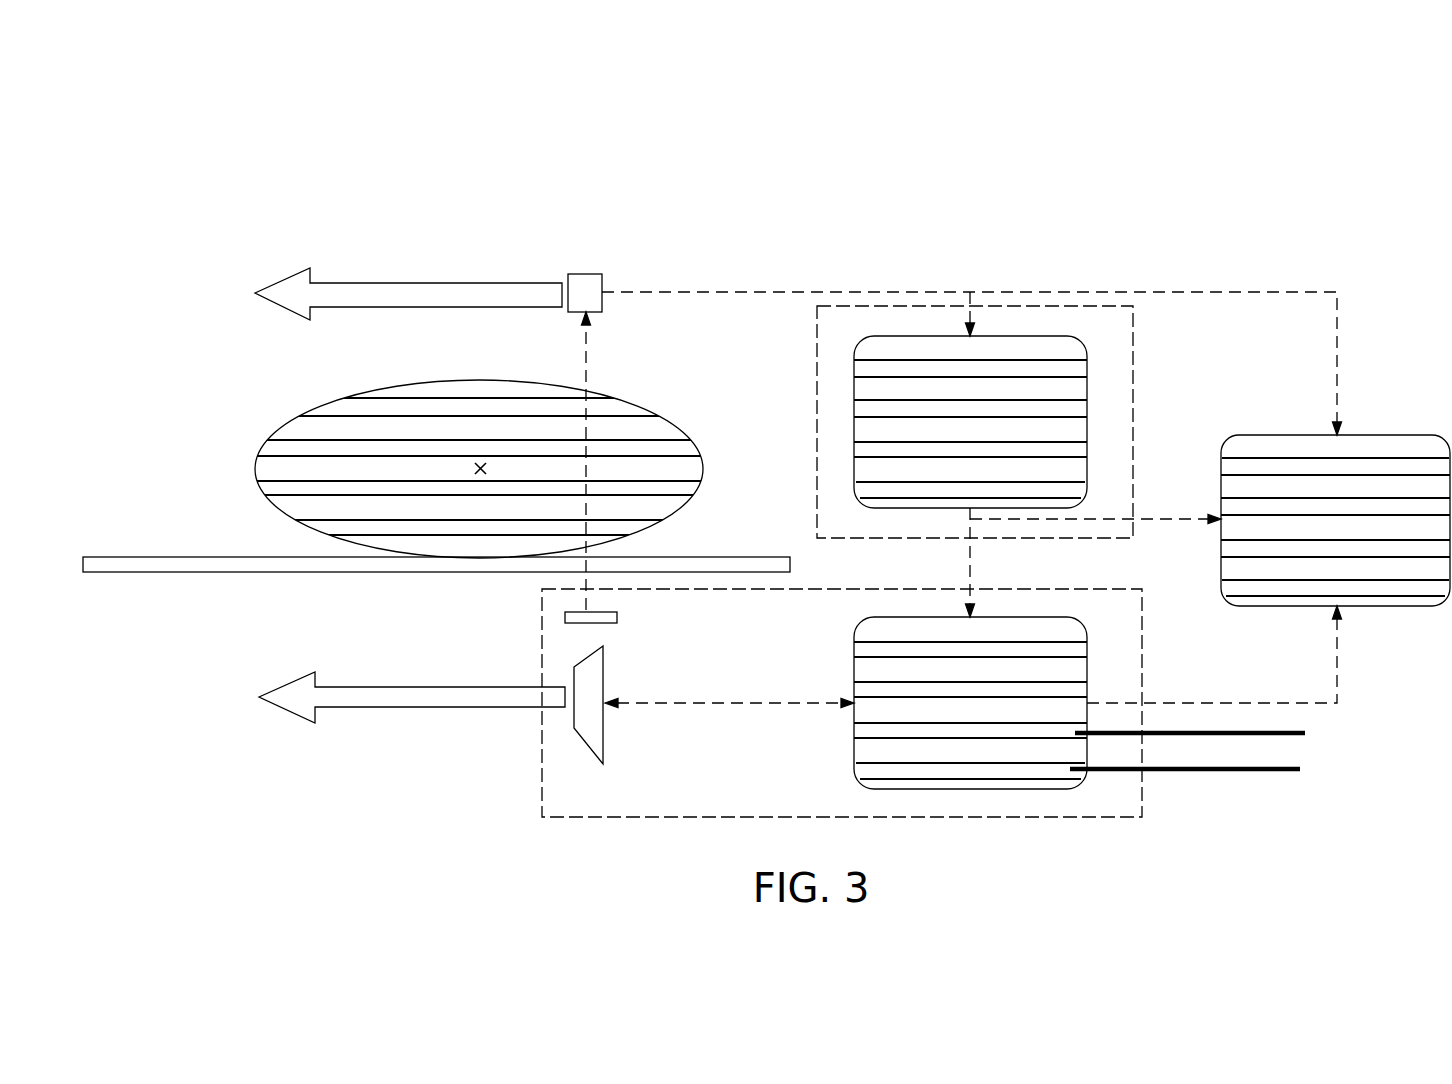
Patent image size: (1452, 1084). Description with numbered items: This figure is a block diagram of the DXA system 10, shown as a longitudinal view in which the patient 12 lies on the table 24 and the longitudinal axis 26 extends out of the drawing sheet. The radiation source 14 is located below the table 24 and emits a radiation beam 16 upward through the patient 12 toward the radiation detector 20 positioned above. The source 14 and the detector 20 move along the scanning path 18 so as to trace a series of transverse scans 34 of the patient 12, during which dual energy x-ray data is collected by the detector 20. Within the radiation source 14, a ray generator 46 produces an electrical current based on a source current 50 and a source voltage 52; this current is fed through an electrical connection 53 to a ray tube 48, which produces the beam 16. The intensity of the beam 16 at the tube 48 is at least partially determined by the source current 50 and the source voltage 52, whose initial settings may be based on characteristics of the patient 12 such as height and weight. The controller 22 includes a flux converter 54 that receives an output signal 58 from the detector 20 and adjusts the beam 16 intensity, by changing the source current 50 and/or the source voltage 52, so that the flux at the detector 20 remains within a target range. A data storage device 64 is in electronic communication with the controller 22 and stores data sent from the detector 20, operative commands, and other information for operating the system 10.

The system 10 is at (465, 150).
The patient 12 is at (295, 420).
The radiation source 14 is at (785, 817).
The radiation beam 16 is at (588, 362).
The scanning path 18 is at (362, 262).
The radiation detector 20 is at (585, 274).
The controller 22 is at (817, 363).
The table 24 is at (178, 557).
The longitudinal axis 26 is at (476, 464).
The transverse scans 34 is at (468, 283).
The ray generator 46 is at (1088, 665).
The ray tube 48 is at (605, 670).
The source current 50 is at (1305, 738).
The source voltage 52 is at (1222, 772).
The electrical connection 53 is at (715, 705).
The flux converter 54 is at (1088, 390).
The output signal 58 is at (717, 292).
The data storage device 64 is at (1400, 435).